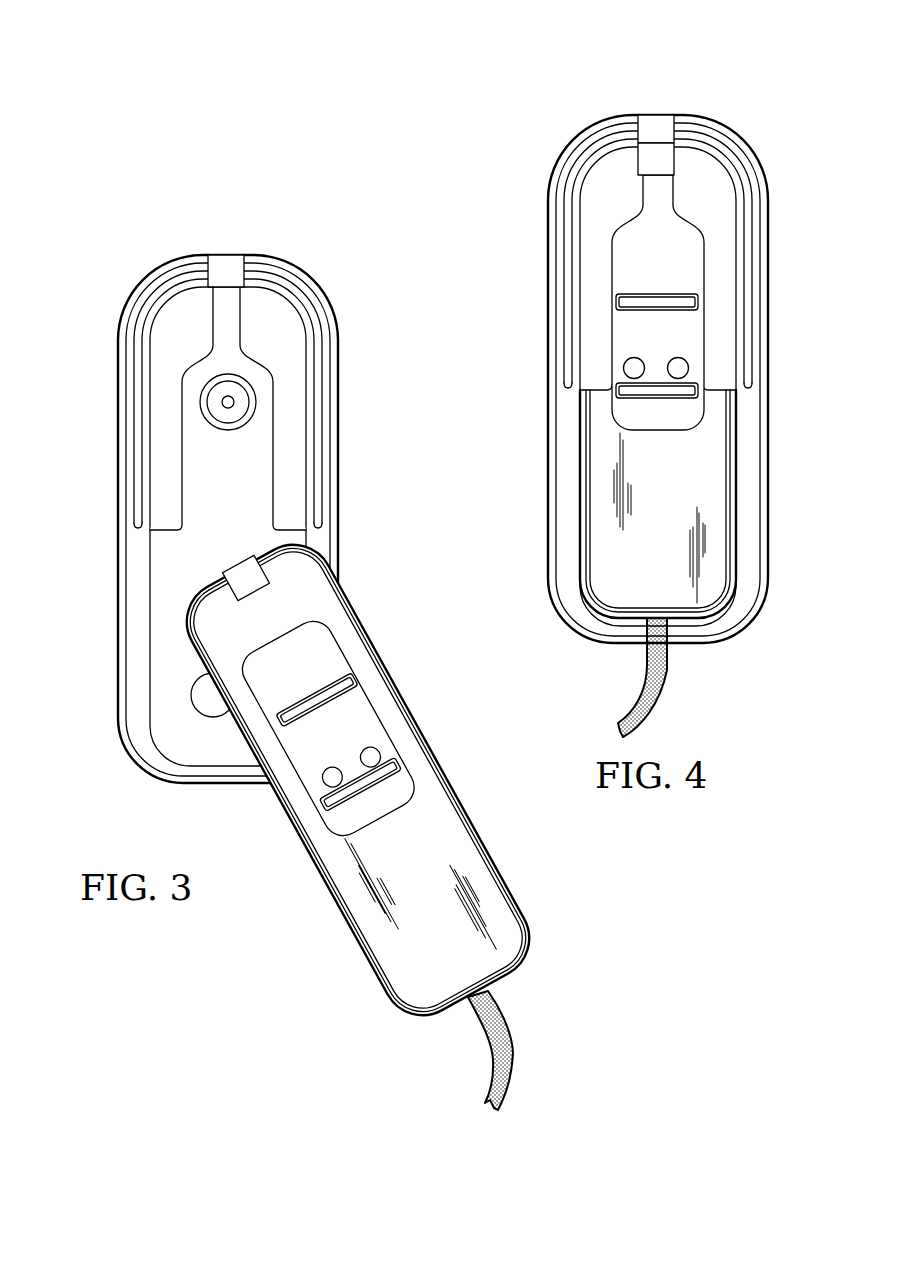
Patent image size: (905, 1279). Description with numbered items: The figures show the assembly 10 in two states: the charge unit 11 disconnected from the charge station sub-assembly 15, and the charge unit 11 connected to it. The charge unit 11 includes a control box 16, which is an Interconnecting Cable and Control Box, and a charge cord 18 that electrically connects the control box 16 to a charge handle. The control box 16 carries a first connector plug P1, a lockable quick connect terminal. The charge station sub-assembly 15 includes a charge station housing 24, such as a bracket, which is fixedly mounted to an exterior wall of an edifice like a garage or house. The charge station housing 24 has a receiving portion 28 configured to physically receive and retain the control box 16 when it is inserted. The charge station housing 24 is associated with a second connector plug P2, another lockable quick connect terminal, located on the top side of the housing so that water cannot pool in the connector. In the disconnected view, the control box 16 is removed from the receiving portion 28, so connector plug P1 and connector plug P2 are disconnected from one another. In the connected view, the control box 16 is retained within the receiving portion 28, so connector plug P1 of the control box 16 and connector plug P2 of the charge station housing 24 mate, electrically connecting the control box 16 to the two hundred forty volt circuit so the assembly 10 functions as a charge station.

In FIG. 3, the assembly 10 is at (312, 649).
In FIG. 4, the assembly 10 is at (700, 378).
In FIG. 3, the charge unit 11 is at (379, 805).
In FIG. 3, the charge station sub-assembly 15 is at (234, 496).
In FIG. 3, the control box 16 is at (328, 728).
In FIG. 3, the charge cord 18 is at (505, 1028).
In FIG. 3, the charge station housing 24 is at (117, 645).
In FIG. 3, the receiving portion 28 is at (190, 333).
In FIG. 3, the first connector plug P1 is at (246, 577).
In FIG. 4, the first connector plug P1 is at (657, 160).
In FIG. 3, the second connector plug P2 is at (227, 272).
In FIG. 4, the second connector plug P2 is at (657, 130).